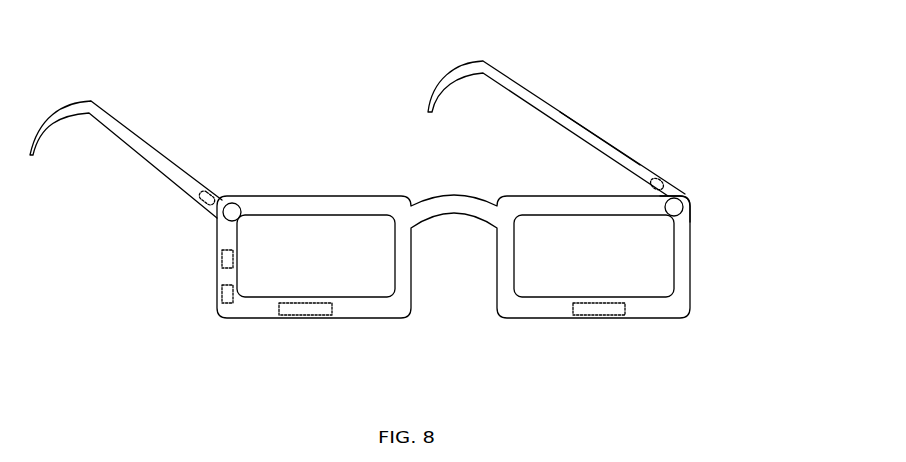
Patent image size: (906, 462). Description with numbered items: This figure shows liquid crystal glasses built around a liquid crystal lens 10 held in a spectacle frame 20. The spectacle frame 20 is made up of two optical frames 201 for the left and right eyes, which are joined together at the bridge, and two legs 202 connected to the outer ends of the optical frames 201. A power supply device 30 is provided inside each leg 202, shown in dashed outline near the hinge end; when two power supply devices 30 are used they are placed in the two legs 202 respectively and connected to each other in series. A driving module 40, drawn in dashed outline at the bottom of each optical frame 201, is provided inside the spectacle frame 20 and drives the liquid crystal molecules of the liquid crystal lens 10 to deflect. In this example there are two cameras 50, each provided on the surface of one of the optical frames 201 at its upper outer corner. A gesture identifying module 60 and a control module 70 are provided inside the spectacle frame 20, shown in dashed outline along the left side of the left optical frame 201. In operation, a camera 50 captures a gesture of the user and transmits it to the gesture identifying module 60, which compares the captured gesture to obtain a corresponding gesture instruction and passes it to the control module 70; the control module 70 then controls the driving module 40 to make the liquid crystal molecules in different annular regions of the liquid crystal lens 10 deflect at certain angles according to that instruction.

The liquid crystal lens 10 is at (650, 270).
The spectacle frame 20 is at (756, 152).
The optical frame 201 is at (679, 222).
The glasses leg 202 is at (627, 157).
The power supply device 30 is at (210, 197).
The driving module 40 is at (313, 308).
The camera 50 is at (233, 212).
The gesture identifying module 60 is at (227, 257).
The control module 70 is at (227, 294).